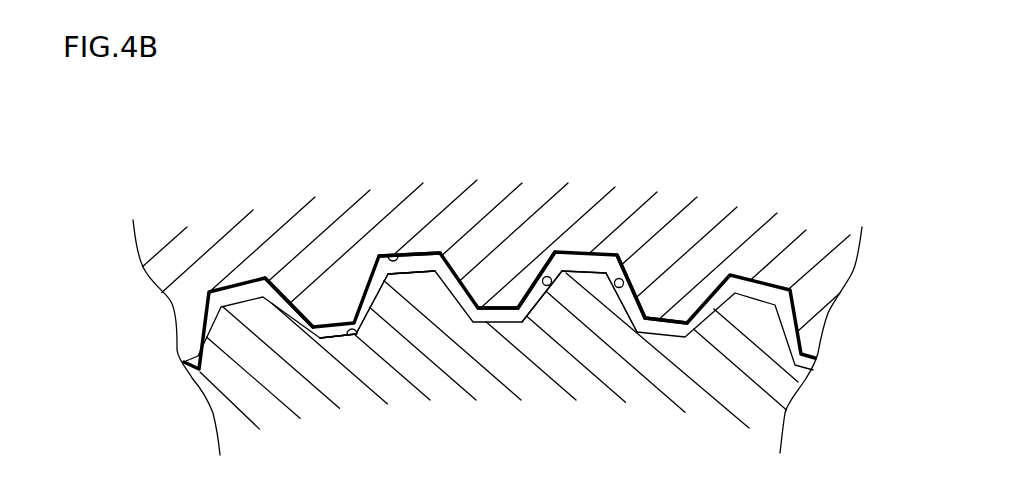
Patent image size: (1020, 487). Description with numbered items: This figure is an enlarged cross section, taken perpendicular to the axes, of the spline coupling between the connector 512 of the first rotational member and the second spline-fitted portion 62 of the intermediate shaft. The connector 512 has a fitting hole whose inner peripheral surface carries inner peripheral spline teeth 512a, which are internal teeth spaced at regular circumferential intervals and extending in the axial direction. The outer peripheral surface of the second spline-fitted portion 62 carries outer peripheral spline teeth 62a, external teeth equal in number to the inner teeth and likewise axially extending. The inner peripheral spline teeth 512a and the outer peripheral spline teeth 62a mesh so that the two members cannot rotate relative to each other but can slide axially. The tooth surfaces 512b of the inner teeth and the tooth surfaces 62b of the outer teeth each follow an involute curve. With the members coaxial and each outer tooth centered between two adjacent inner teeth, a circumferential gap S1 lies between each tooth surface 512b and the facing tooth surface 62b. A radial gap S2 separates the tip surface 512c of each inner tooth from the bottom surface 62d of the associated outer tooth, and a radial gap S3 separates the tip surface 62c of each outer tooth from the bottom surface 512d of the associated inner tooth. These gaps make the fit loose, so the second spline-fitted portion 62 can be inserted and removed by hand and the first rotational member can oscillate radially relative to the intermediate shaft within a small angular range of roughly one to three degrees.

The connector 512 is at (163, 258).
The inner peripheral spline teeth 512a is at (331, 303).
The tooth surface of inner peripheral spline tooth 512b is at (540, 300).
The tip surface of inner peripheral spline tooth 512c is at (318, 341).
The bottom surface of inner peripheral spline tooth 512d is at (392, 254).
The second spline-fitted portion 62 is at (243, 380).
The outer peripheral spline teeth 62a is at (583, 293).
The tooth surface of outer peripheral spline tooth 62b is at (619, 308).
The tip surface of outer peripheral spline tooth 62c is at (424, 266).
The bottom surface of outer peripheral spline tooth 62d is at (372, 336).
The circumferential gap S1 is at (616, 288).
The radial gap S2 is at (350, 337).
The radial gap S3 is at (411, 262).